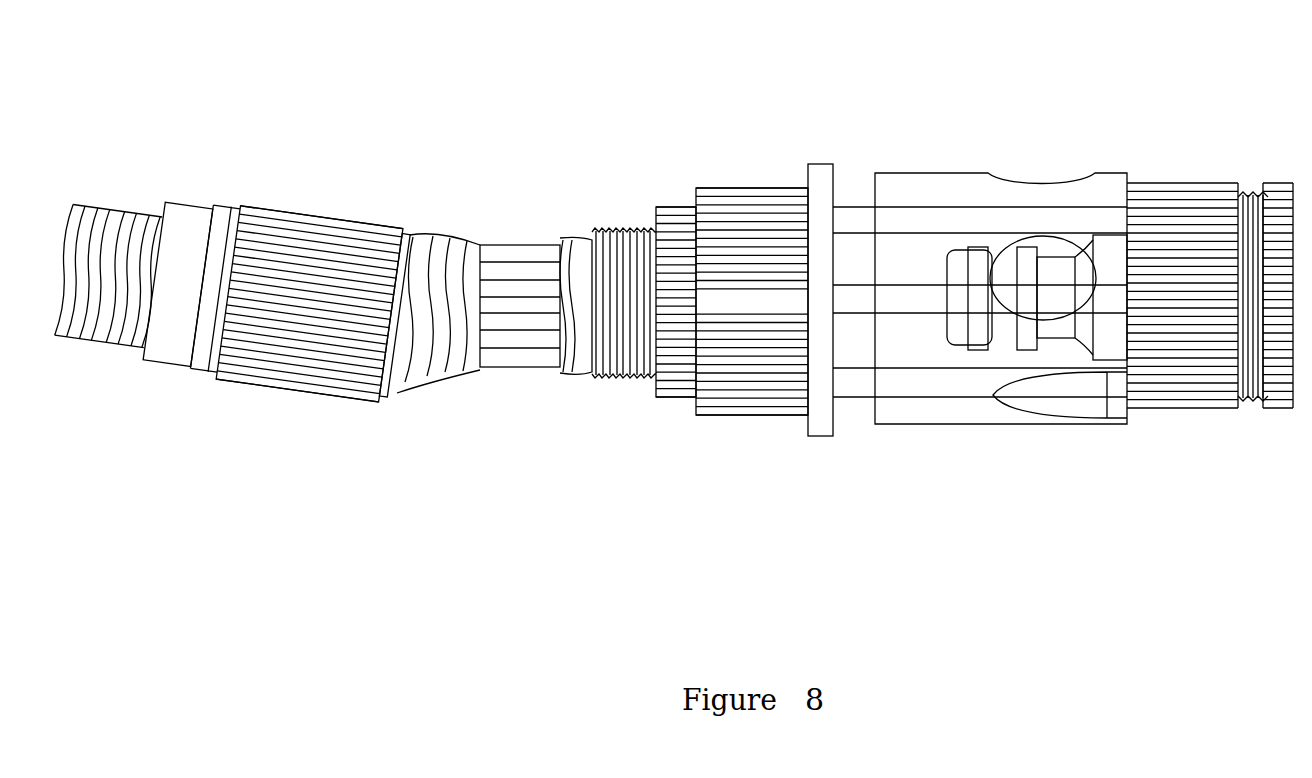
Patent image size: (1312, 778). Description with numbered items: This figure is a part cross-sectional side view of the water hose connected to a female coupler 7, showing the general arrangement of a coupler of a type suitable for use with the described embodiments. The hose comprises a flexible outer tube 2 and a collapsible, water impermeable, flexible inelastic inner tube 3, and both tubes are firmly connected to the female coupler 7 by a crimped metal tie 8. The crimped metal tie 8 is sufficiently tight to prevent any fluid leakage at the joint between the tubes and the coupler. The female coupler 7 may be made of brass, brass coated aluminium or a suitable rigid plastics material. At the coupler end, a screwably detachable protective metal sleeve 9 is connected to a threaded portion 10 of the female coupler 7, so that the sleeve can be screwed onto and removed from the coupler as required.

The flexible outer tube 2 is at (447, 262).
The collapsible water impermeable flexible inelastic inner tube 3 is at (113, 212).
The female coupler 7 is at (744, 457).
The crimped metal tie 8 is at (519, 270).
The protective metal sleeve 9 is at (320, 212).
The threaded portion 10 is at (612, 232).